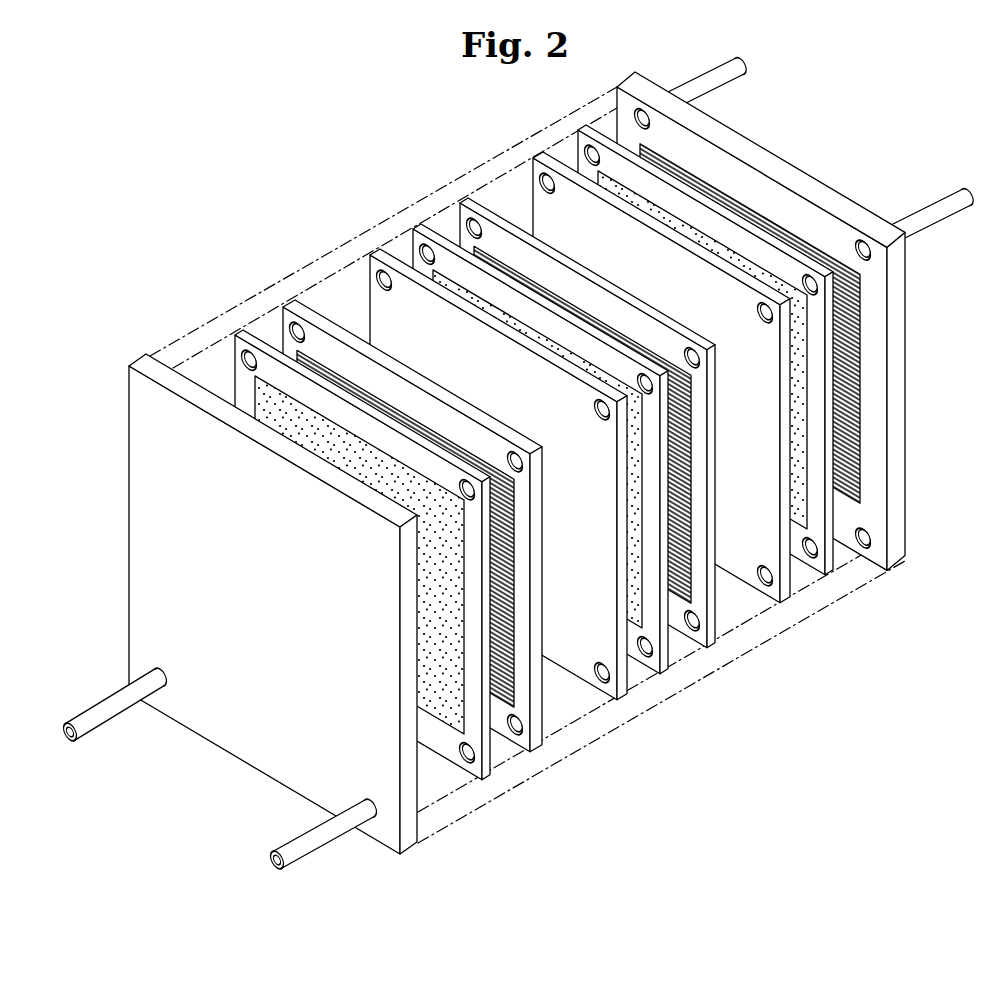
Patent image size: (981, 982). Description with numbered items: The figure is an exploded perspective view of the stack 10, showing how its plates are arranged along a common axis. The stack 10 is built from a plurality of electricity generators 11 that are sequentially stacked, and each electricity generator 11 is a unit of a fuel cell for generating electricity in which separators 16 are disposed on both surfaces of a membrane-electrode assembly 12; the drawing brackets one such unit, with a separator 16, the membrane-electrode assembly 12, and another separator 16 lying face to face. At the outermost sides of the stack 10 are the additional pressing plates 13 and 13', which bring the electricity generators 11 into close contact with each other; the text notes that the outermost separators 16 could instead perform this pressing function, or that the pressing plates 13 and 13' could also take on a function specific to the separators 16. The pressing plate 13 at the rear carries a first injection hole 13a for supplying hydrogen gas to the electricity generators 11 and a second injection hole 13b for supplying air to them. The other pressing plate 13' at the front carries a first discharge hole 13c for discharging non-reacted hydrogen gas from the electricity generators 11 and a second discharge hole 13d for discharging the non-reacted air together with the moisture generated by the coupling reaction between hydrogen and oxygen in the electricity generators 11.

The stack 10 is at (434, 139).
The electricity generator 11 is at (788, 687).
The membrane-electrode assembly 12 is at (673, 662).
The pressing plate 13 is at (787, 321).
The pressing plate 13' is at (305, 619).
The first injection hole 13a is at (728, 63).
The second injection hole 13b is at (956, 192).
The first discharge hole 13c is at (283, 847).
The second discharge hole 13d is at (90, 708).
The separator 16 is at (631, 691).